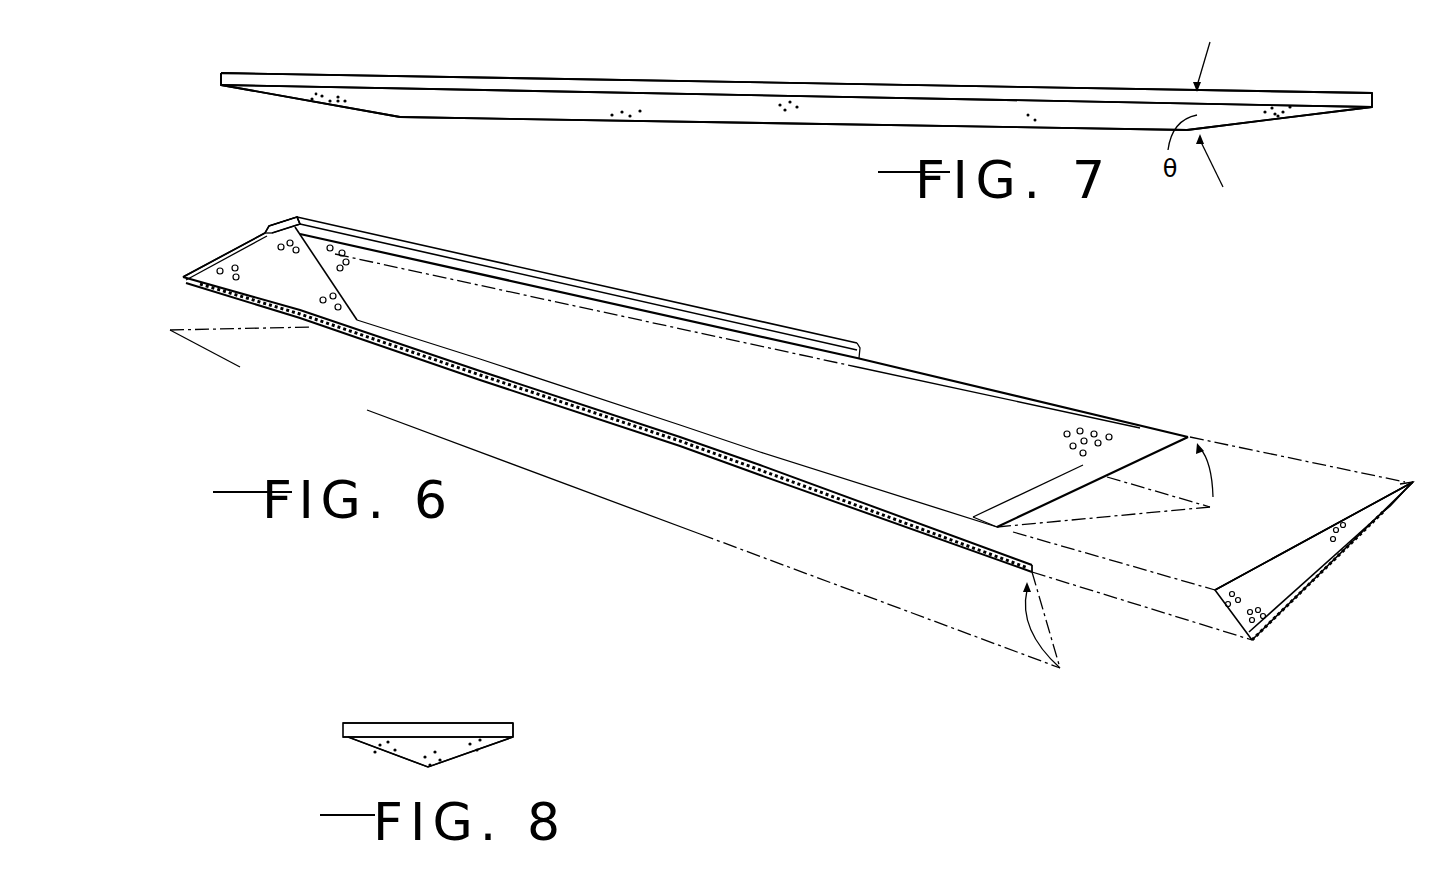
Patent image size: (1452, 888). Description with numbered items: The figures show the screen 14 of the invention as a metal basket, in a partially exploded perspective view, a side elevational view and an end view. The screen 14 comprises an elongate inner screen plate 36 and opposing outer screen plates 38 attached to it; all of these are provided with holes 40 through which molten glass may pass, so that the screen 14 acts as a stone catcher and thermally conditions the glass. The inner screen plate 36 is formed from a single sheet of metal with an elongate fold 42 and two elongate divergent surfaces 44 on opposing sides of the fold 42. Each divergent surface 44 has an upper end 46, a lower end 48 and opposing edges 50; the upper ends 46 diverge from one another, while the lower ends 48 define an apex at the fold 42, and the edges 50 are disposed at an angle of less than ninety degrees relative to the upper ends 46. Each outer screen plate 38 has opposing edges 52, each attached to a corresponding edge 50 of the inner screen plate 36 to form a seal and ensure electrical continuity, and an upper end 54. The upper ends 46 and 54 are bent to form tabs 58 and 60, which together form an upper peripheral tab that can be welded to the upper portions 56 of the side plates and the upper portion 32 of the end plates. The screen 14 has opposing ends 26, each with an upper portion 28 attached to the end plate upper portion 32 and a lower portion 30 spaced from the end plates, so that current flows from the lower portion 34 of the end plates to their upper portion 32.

In FIG. 7, the screen 14 is at (1222, 78).
In FIG. 8, the screen 14 is at (424, 698).
In FIG. 7, the ends 26 is at (199, 120).
In FIG. 6, the ends 26 is at (178, 283).
In FIG. 7, the upper portion 28 is at (232, 66).
In FIG. 6, the upper portion 28 is at (228, 214).
In FIG. 6, the lower portion 30 is at (310, 333).
In FIG. 8, the upper portion 32 is at (380, 706).
In FIG. 7, the lower portion 34 is at (441, 130).
In FIG. 8, the lower portion 34 is at (463, 769).
In FIG. 6, the inner screen plate 36 is at (786, 321).
In FIG. 6, the outer screen plates 38 is at (221, 245).
In FIG. 8, the outer screen plates 38 is at (379, 752).
In FIG. 7, the holes 40 is at (303, 98).
In FIG. 6, the holes 40 is at (270, 230).
In FIG. 6, the fold 42 is at (867, 483).
In FIG. 7, the divergent surfaces 44 is at (628, 112).
In FIG. 6, the divergent surfaces 44 is at (433, 362).
In FIG. 7, the upper end 46 is at (1050, 95).
In FIG. 6, the upper end 46 is at (343, 327).
In FIG. 7, the lower end 48 is at (782, 120).
In FIG. 7, the edges 50 is at (341, 108).
In FIG. 6, the edges 50 is at (1150, 462).
In FIG. 6, the edges 52 is at (1215, 588).
In FIG. 6, the upper end 54 is at (210, 262).
In FIG. 8, the upper portions 56 is at (456, 704).
In FIG. 7, the tab 58 is at (888, 92).
In FIG. 6, the tab 58 is at (537, 273).
In FIG. 6, the tab 60 is at (290, 226).
In FIG. 8, the tab 60 is at (495, 730).